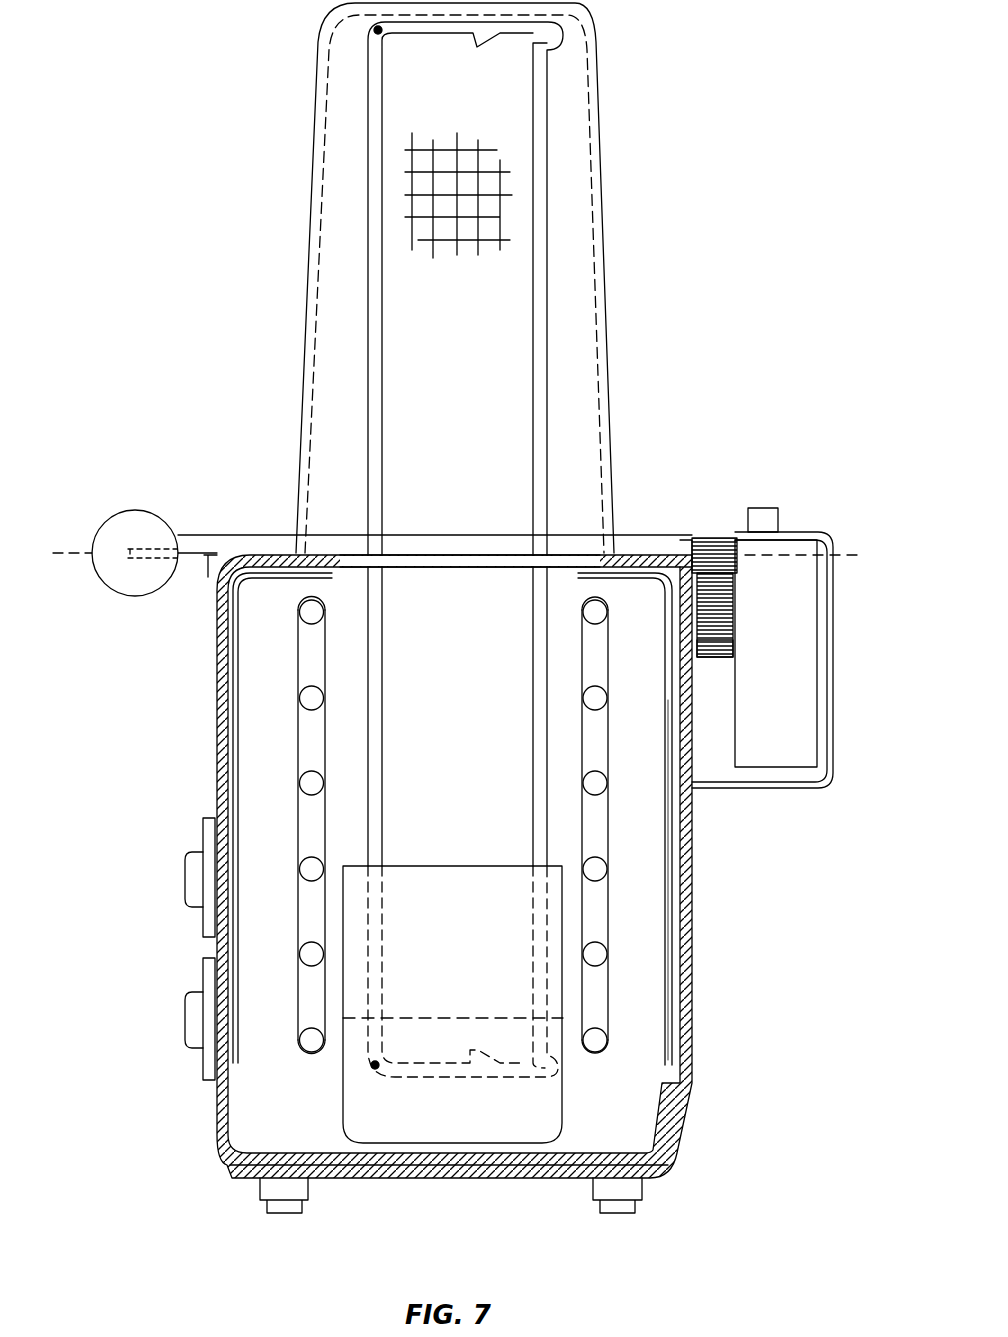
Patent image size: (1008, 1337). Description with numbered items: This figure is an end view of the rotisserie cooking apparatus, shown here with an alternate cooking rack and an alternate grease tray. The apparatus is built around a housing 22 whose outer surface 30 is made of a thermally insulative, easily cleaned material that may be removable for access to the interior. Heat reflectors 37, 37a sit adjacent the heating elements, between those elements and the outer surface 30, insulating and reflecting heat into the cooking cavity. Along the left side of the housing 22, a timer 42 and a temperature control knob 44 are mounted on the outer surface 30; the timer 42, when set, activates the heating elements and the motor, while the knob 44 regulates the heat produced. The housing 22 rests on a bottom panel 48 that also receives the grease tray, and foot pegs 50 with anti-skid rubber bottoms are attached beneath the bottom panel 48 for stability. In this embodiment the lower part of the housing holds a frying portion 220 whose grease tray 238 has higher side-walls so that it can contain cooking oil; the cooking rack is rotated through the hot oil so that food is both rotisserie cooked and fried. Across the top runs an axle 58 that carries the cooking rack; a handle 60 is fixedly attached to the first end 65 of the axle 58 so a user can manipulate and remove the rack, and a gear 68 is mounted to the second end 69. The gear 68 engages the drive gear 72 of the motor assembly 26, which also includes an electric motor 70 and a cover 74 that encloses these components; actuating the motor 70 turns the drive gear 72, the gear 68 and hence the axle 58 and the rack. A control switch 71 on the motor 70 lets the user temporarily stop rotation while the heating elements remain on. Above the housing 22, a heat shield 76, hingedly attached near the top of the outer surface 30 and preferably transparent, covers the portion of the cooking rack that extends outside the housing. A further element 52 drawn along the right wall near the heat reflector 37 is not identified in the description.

The heat shield 76 is at (313, 123).
The handle 60 is at (98, 528).
The axle 58 is at (222, 535).
The first end 65 is at (210, 575).
The heat reflector 37a is at (231, 689).
The housing 22 is at (432, 885).
The outer surface 30 is at (220, 800).
The temperature control knob 44 is at (210, 840).
The timer 42 is at (188, 998).
The frying portion 220 is at (401, 1004).
The grease tray 238 is at (340, 1108).
The foot pegs 50 is at (300, 1193).
The bottom panel 48 is at (670, 1173).
The insulation gap 52 is at (673, 975).
The heat reflector 37 is at (672, 910).
The electric motor 70 is at (800, 740).
The cover 74 is at (827, 703).
The drive gear 72 is at (713, 664).
The second end 69 is at (680, 548).
The gear 68 is at (712, 538).
The control switch 71 is at (762, 508).
The motor assembly 26 is at (775, 617).